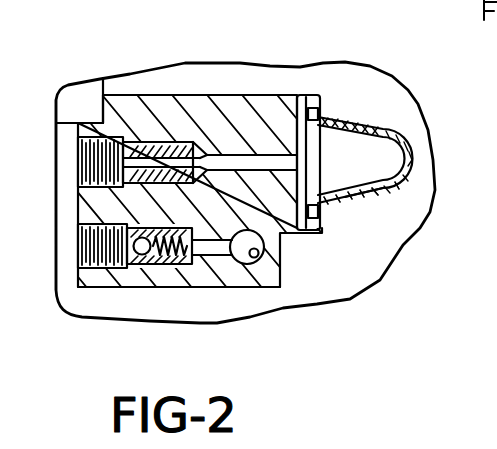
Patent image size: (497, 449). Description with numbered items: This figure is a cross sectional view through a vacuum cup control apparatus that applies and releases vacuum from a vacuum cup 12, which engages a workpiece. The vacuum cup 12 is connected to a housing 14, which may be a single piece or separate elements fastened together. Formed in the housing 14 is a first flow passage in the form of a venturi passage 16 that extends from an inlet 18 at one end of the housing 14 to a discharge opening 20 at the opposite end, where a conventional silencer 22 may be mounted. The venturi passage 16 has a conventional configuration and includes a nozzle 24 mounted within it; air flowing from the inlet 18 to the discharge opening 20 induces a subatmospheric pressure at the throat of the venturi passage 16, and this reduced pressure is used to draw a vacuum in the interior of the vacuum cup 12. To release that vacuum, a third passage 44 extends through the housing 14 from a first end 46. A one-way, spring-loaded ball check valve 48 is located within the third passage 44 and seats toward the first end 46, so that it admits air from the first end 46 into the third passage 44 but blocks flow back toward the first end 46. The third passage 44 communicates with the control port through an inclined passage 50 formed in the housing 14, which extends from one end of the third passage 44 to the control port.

The vacuum cup 12 is at (342, 36).
The housing 14 is at (160, 102).
The venturi passage 16 is at (300, 160).
The inlet 18 is at (100, 135).
The discharge opening 20 is at (344, 122).
The silencer 22 is at (389, 193).
The nozzle 24 is at (128, 140).
The third passage 44 is at (219, 242).
The first end 46 is at (100, 268).
The ball check valve 48 is at (160, 266).
The inclined passage 50 is at (258, 259).